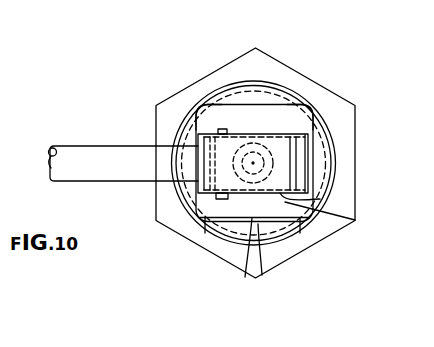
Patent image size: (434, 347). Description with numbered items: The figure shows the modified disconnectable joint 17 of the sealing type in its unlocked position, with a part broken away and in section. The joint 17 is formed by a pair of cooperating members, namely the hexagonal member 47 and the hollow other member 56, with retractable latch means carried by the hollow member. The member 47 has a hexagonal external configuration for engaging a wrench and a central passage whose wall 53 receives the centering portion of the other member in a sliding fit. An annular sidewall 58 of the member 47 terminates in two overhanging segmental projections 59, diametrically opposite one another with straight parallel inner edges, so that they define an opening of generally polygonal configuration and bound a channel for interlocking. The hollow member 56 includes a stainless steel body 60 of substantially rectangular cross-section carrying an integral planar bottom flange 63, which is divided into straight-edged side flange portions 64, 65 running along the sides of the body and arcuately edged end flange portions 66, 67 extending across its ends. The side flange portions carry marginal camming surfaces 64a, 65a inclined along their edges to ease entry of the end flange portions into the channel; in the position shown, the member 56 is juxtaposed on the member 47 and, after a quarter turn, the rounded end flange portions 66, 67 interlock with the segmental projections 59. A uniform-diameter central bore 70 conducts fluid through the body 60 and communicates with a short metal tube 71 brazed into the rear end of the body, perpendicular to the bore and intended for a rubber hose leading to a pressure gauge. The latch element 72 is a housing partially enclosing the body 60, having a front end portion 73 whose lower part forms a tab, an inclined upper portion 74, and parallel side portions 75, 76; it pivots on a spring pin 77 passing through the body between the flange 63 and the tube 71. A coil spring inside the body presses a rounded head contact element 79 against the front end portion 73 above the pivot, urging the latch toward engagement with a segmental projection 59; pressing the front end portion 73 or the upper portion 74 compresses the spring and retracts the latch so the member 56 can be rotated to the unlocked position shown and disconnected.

The modified disconnectable joint 17 is at (143, 246).
The hexagonal member 47 is at (284, 62).
The wall of the passage 53 is at (262, 195).
The hollow other member 56 is at (310, 222).
The annular sidewall 58 is at (287, 80).
The overhanging segmental projections 59 is at (248, 102).
The body 60 is at (318, 198).
The bottom flange 63 is at (216, 199).
The side flange portion 64 is at (233, 118).
The marginal camming surface 64a is at (203, 110).
The side flange portion 65 is at (253, 279).
The marginal camming surface 65a is at (302, 224).
The end flange portion 66 is at (354, 112).
The end flange portion 67 is at (198, 134).
The central bore 70 is at (253, 163).
The metal tube 71 is at (88, 146).
The latch element 72 is at (300, 135).
The front end portion 73 is at (312, 180).
The upper portion 74 is at (355, 220).
The side portion 75 is at (198, 192).
The side portion 76 is at (193, 138).
The spring pin 77 is at (221, 129).
The rounded head contact element 79 is at (305, 156).